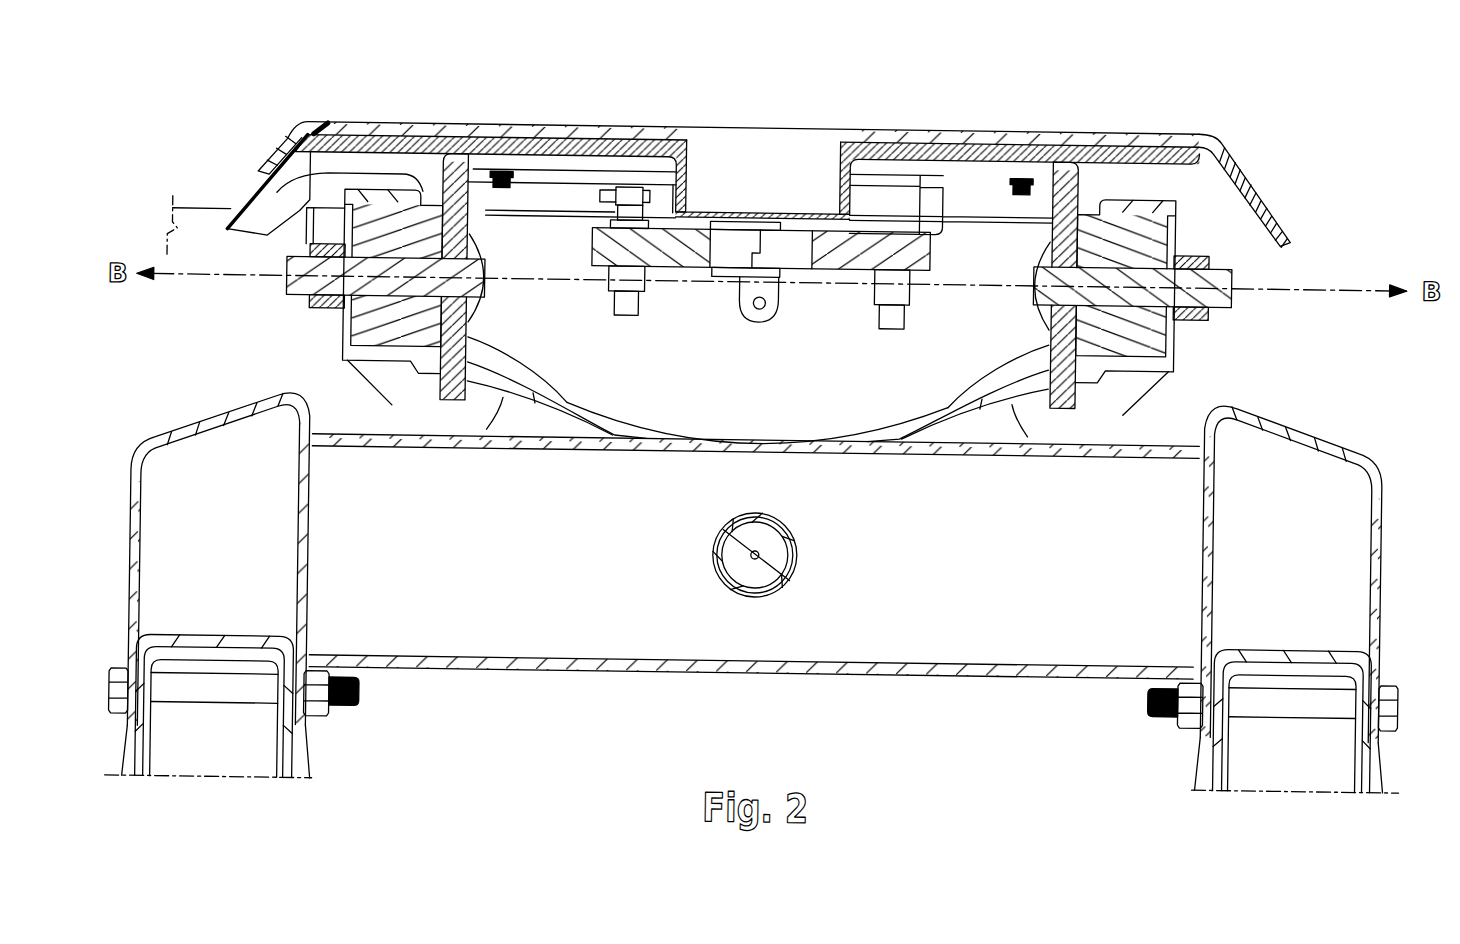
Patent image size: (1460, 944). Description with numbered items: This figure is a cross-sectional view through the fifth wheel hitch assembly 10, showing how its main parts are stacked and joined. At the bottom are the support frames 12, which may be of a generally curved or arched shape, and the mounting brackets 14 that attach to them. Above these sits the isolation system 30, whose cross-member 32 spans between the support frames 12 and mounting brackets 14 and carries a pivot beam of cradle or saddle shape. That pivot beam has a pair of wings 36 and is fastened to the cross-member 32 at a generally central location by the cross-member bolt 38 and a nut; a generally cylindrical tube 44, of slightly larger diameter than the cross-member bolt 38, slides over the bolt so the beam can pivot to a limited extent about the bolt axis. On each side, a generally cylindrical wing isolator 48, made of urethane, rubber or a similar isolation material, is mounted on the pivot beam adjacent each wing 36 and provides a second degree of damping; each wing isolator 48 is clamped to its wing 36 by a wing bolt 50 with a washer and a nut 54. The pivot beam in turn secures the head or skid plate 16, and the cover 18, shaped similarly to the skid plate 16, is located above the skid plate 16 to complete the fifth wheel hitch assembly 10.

The fifth wheel hitch assembly 10 is at (1196, 97).
The support frame 12 is at (297, 770).
The mounting bracket 14 is at (190, 438).
The skid plate 16 is at (1274, 206).
The cover 18 is at (1196, 131).
The isolation system 30 is at (1285, 254).
The cross-member 32 is at (195, 233).
The wings 36 is at (393, 385).
The cross-member bolt 38 is at (752, 616).
The tube 44 is at (799, 565).
The wing isolator 48 is at (411, 238).
The wing bolt 50 is at (473, 271).
The nut 54 is at (315, 253).